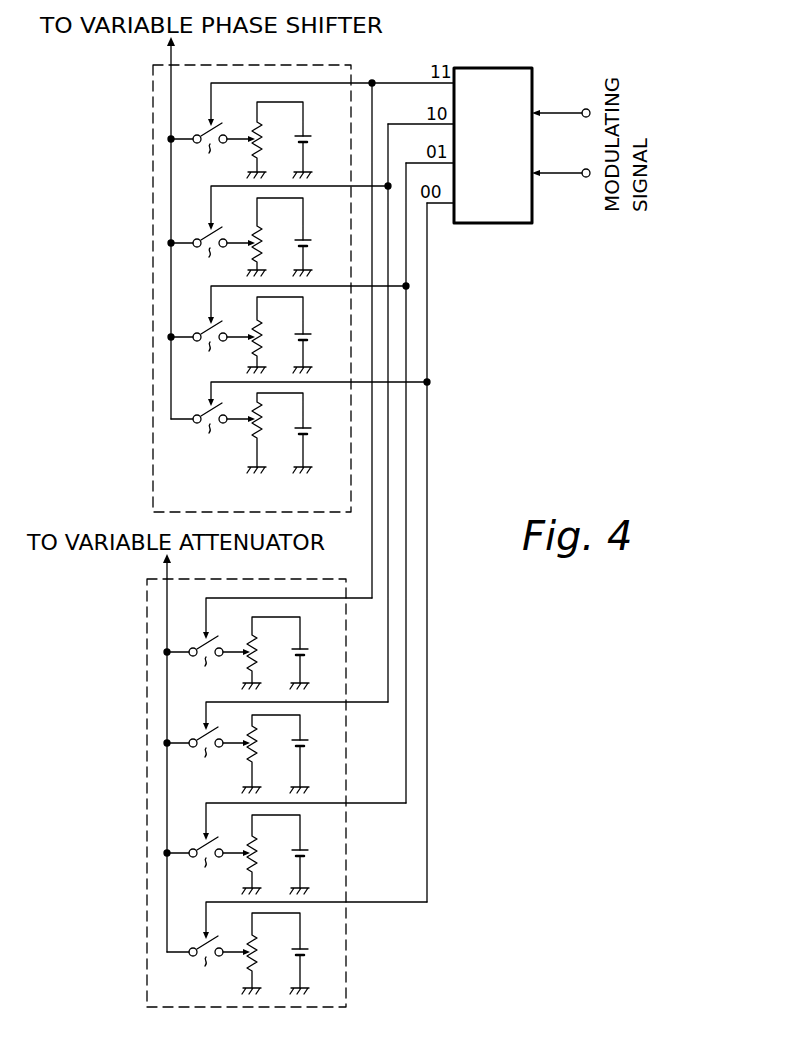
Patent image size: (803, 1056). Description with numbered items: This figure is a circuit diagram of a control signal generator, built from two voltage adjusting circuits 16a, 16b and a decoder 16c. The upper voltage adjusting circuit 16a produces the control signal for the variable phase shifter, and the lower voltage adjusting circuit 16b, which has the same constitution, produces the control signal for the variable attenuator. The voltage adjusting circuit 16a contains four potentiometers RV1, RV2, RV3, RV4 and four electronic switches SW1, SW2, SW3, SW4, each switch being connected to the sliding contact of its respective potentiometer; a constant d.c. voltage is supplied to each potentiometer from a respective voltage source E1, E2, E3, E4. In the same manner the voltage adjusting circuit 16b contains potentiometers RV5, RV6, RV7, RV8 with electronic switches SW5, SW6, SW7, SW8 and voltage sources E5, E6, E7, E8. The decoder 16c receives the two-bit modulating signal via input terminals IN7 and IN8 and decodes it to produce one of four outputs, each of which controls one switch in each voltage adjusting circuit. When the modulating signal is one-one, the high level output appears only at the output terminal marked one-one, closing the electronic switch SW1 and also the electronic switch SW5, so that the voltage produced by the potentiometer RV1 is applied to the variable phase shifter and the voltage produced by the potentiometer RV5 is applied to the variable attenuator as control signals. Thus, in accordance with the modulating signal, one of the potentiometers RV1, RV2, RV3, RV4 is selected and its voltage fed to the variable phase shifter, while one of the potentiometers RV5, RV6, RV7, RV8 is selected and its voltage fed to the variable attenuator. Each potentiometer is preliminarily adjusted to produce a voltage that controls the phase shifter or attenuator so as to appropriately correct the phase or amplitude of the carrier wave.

The voltage adjusting circuit 16a is at (365, 66).
The voltage adjusting circuit 16b is at (347, 993).
The decoder 16c is at (497, 224).
The input terminal IN7 is at (561, 103).
The input terminal IN8 is at (561, 163).
The potentiometer RV1 is at (255, 122).
The potentiometer RV2 is at (255, 226).
The potentiometer RV3 is at (255, 320).
The potentiometer RV4 is at (255, 404).
The potentiometer RV5 is at (256, 637).
The potentiometer RV6 is at (257, 735).
The potentiometer RV7 is at (257, 835).
The potentiometer RV8 is at (258, 935).
The electronic switch SW1 is at (199, 154).
The electronic switch SW2 is at (199, 254).
The electronic switch SW3 is at (199, 350).
The electronic switch SW4 is at (199, 434).
The electronic switch SW5 is at (195, 665).
The electronic switch SW6 is at (195, 756).
The electronic switch SW7 is at (195, 866).
The electronic switch SW8 is at (195, 966).
The voltage source E1 is at (314, 135).
The voltage source E2 is at (314, 239).
The voltage source E3 is at (321, 333).
The voltage source E4 is at (314, 427).
The voltage source E5 is at (318, 648).
The voltage source E6 is at (318, 739).
The voltage source E7 is at (318, 849).
The voltage source E8 is at (318, 948).